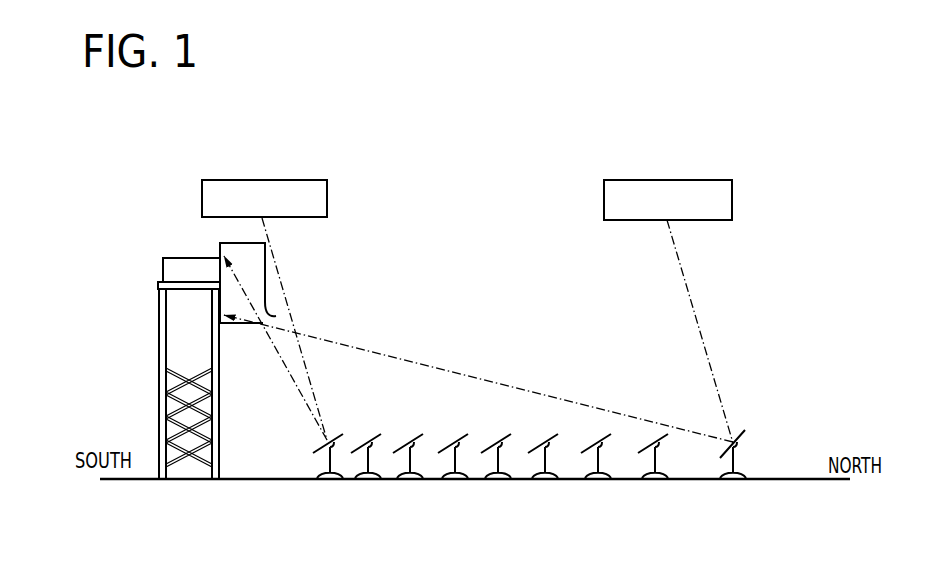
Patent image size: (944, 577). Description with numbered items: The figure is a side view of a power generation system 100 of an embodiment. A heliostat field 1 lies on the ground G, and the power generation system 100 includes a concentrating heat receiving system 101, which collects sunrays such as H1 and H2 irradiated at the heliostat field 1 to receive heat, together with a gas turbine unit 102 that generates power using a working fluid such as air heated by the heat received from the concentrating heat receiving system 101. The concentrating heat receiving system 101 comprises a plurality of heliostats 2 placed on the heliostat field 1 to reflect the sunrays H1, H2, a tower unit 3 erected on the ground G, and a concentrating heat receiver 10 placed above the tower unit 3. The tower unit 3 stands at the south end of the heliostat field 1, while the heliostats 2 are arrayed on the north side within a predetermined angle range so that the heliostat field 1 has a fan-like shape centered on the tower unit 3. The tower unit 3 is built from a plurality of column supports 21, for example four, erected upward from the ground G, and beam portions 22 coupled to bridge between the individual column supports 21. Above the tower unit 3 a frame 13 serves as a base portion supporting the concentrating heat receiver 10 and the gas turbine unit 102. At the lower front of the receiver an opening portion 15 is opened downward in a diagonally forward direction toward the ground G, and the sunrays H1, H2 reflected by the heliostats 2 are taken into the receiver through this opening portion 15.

The power generation system 100 is at (117, 239).
The concentrating heat receiver 10 is at (216, 241).
The opening portion 15 is at (276, 316).
The gas turbine unit 102 is at (175, 255).
The concentrating heat receiving system 101 is at (156, 283).
The frame 13 is at (182, 290).
The tower unit 3 is at (171, 417).
The column supports 21 is at (163, 464).
The beam portions 22 is at (200, 459).
The heliostats 2 is at (655, 462).
The heliostat field 1 is at (762, 480).
The ground G is at (801, 480).
The sunray H1 is at (282, 360).
The sunray H2 is at (390, 352).